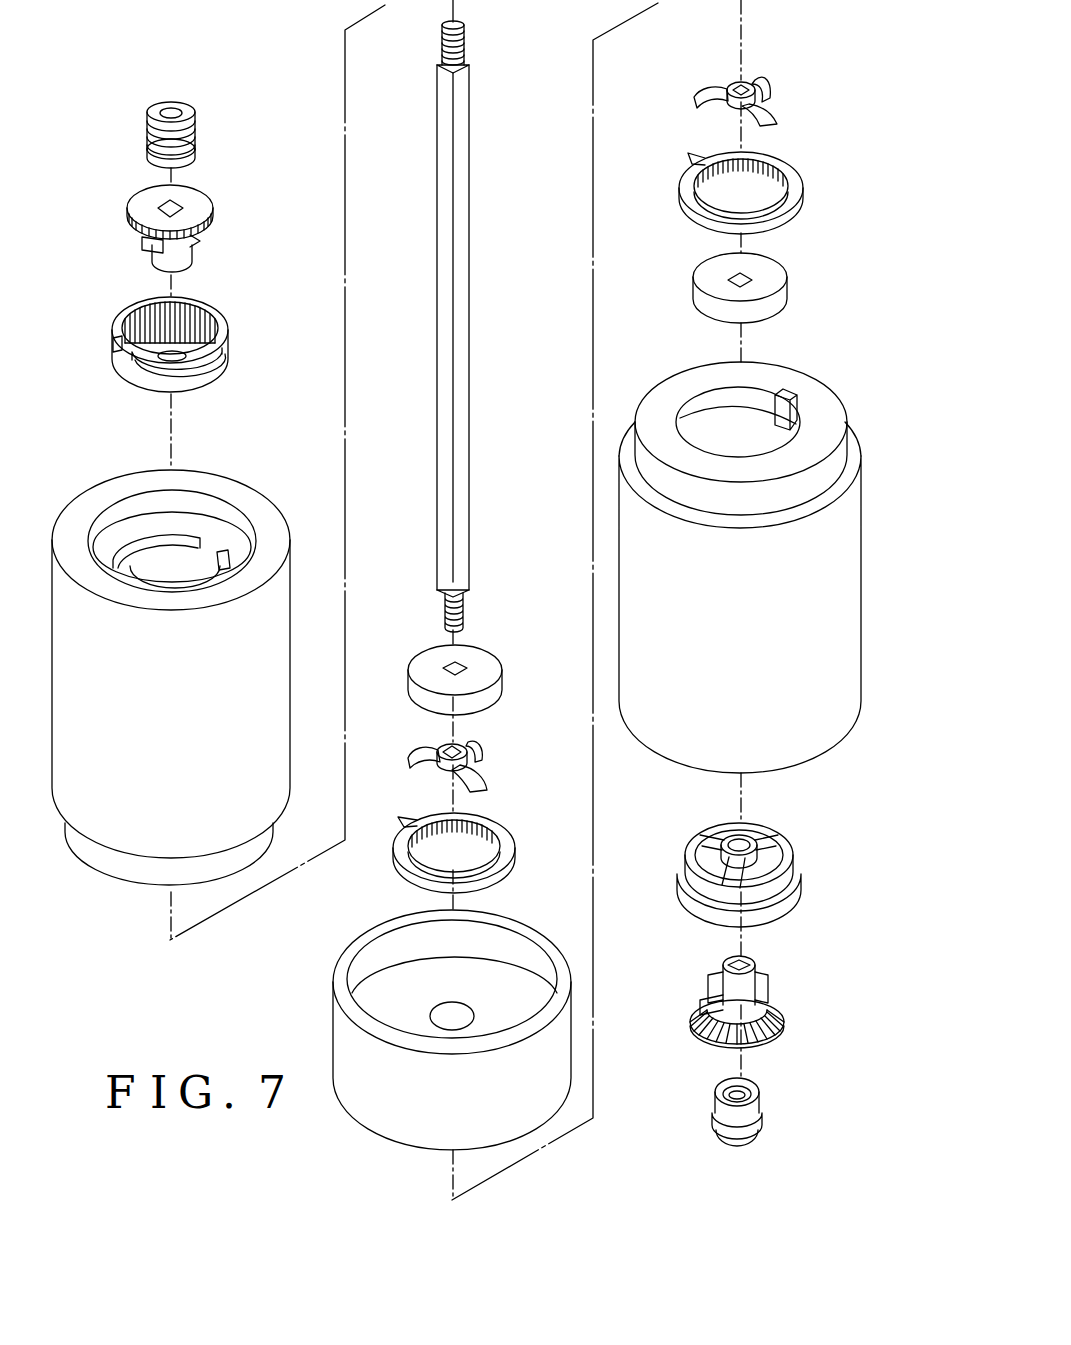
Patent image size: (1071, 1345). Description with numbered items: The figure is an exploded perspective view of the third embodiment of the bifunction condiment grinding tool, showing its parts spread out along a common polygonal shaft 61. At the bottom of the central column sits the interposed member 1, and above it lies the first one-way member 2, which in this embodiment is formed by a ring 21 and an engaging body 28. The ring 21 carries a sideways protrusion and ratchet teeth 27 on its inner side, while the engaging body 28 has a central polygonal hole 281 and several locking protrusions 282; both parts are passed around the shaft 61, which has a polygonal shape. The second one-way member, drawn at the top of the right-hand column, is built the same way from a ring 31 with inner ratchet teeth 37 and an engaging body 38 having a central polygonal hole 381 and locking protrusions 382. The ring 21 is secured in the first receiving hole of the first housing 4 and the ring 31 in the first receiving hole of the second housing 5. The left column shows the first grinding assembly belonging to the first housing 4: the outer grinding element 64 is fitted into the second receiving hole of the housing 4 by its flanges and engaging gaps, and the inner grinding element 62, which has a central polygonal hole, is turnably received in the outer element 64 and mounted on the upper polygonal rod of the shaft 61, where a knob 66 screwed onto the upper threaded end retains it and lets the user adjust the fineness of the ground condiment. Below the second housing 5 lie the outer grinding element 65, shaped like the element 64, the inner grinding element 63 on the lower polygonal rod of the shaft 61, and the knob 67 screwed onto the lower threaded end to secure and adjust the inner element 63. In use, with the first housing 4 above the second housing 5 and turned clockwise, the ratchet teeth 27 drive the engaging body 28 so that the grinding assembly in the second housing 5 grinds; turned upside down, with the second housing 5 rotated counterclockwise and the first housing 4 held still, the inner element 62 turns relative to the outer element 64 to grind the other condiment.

The interposed member 1 is at (350, 1052).
The first one-way member 2 is at (484, 861).
The ring 21 is at (485, 872).
The ratchet teeth 27 is at (482, 848).
The engaging body 28 is at (462, 745).
The central polygonal hole 281 is at (475, 742).
The locking protrusions 282 is at (415, 750).
The first housing 4 is at (284, 617).
The second housing 5 is at (853, 595).
The ring 31 is at (785, 207).
The ratchet teeth 37 is at (783, 208).
The engaging body 38 is at (752, 83).
The central polygonal hole 381 is at (748, 80).
The locking protrusions 382 is at (697, 92).
The shaft 61 is at (462, 238).
The inner grinding element 62 is at (200, 207).
The inner grinding element 63 is at (778, 1012).
The outer grinding element 64 is at (205, 373).
The outer grinding element 65 is at (780, 887).
The knob 66 is at (195, 132).
The knob 67 is at (762, 1117).